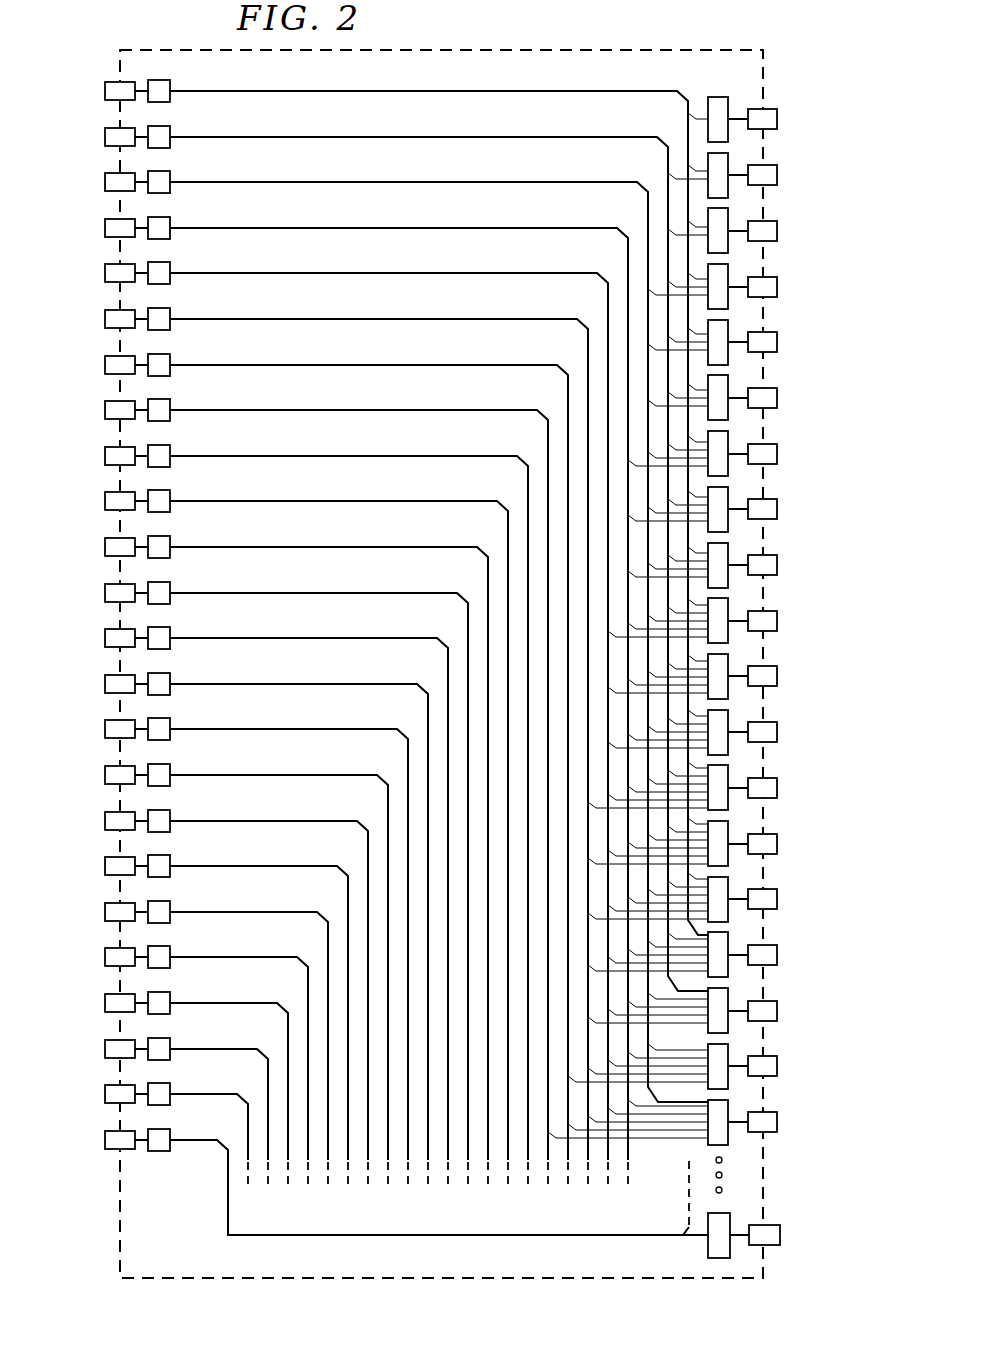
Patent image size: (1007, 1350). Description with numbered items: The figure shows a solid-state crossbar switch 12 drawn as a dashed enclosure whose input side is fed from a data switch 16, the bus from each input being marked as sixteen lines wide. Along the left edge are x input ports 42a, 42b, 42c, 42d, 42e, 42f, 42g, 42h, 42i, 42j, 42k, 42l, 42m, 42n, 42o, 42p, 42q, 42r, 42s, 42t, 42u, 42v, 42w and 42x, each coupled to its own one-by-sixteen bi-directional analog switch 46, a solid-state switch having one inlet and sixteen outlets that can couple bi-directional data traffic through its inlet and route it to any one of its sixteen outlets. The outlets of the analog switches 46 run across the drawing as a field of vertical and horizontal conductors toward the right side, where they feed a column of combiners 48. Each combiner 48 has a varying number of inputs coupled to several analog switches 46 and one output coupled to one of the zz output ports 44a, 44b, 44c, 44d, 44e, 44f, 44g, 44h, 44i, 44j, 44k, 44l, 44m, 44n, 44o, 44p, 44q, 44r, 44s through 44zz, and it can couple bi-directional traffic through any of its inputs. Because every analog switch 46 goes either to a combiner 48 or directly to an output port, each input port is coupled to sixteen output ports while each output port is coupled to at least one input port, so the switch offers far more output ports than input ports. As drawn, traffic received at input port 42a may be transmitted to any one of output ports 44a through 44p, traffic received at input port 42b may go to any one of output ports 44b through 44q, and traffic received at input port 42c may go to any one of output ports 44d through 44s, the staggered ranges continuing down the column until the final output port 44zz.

The crossbar switch 12 is at (795, 58).
The data switch 16 is at (210, 80).
The input port 42a is at (105, 88).
The input port 42b is at (105, 134).
The input port 42c is at (105, 179).
The input port 42d is at (105, 225).
The input port 42e is at (105, 270).
The input port 42f is at (105, 316).
The input port 42g is at (105, 362).
The input port 42h is at (105, 407).
The input port 42i is at (105, 453).
The input port 42j is at (105, 498).
The input port 42k is at (105, 544).
The input port 42l is at (105, 590).
The input port 42m is at (105, 642).
The input port 42n is at (105, 688).
The input port 42o is at (105, 733).
The input port 42p is at (105, 779).
The input port 42q is at (105, 825).
The input port 42r is at (105, 870).
The input port 42s is at (105, 916).
The input port 42t is at (105, 961).
The input port 42u is at (105, 1007).
The input port 42v is at (105, 1053).
The input port 42w is at (105, 1098).
The input port 42x is at (105, 1144).
The output port 44a is at (777, 116).
The output port 44b is at (777, 172).
The output port 44c is at (777, 228).
The output port 44d is at (777, 284).
The output port 44e is at (777, 339).
The output port 44f is at (777, 395).
The output port 44g is at (777, 451).
The output port 44h is at (777, 506).
The output port 44i is at (777, 562).
The output port 44j is at (777, 618).
The output port 44k is at (777, 679).
The output port 44l is at (777, 735).
The output port 44m is at (777, 791).
The output port 44n is at (777, 847).
The output port 44o is at (777, 902).
The output port 44p is at (777, 958).
The output port 44q is at (777, 1014).
The output port 44r is at (777, 1069).
The output port 44s is at (777, 1125).
The output port 44zz is at (780, 1239).
The 1×16 bi-directional analog switch 46 is at (160, 78).
The combiner 48 is at (717, 90).